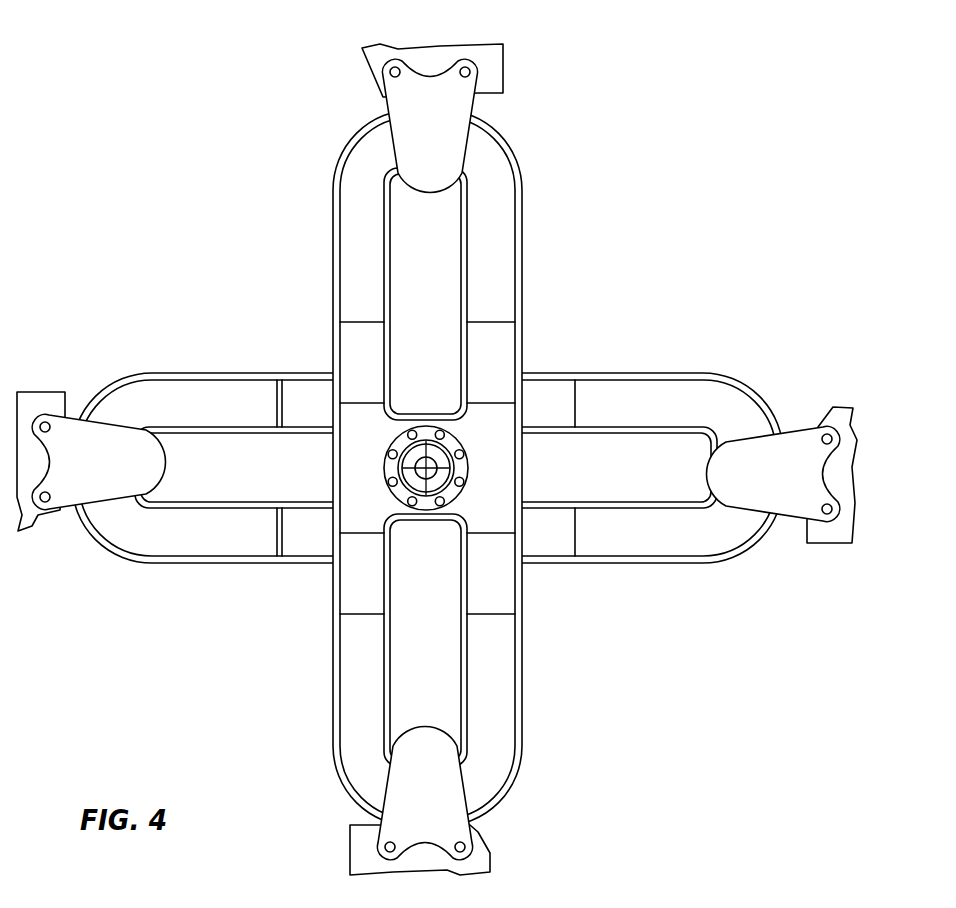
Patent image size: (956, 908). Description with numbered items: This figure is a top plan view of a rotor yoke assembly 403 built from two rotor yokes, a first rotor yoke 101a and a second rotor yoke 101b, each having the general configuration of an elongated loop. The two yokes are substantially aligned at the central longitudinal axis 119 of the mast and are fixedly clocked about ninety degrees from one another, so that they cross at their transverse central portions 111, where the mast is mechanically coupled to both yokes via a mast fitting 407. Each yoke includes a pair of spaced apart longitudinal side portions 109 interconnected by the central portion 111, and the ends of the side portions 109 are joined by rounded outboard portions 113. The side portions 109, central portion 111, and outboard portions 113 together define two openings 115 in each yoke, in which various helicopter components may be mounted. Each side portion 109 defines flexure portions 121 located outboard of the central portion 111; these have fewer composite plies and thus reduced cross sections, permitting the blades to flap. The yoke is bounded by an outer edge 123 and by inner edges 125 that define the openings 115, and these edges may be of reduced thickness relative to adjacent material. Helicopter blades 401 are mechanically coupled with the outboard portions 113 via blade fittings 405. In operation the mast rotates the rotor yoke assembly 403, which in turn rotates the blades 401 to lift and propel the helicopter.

The first rotor yoke 101a is at (533, 245).
The second rotor yoke 101b is at (441, 460).
The longitudinal side portions 109 is at (357, 270).
The transverse central portion 111 is at (360, 497).
The outboard portions 113 is at (478, 148).
The openings 115 is at (303, 450).
The central longitudinal axis 119 is at (427, 452).
The flexure portions 121 is at (365, 363).
The outer edge 123 is at (643, 378).
The inner edges 125 is at (390, 207).
The helicopter blades 401 is at (497, 65).
The rotor yoke assembly 403 is at (660, 98).
The blade fittings 405 is at (433, 118).
The mast fitting 407 is at (462, 470).